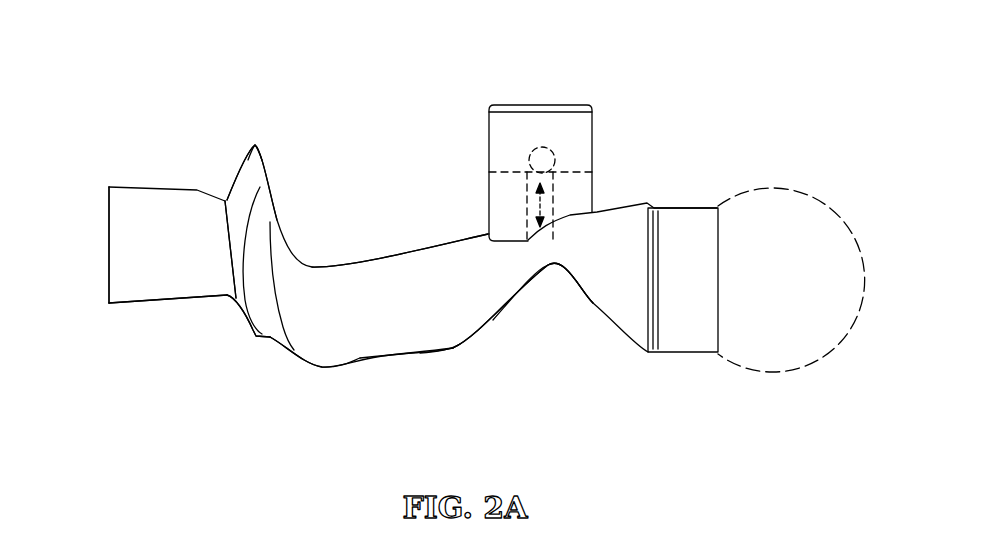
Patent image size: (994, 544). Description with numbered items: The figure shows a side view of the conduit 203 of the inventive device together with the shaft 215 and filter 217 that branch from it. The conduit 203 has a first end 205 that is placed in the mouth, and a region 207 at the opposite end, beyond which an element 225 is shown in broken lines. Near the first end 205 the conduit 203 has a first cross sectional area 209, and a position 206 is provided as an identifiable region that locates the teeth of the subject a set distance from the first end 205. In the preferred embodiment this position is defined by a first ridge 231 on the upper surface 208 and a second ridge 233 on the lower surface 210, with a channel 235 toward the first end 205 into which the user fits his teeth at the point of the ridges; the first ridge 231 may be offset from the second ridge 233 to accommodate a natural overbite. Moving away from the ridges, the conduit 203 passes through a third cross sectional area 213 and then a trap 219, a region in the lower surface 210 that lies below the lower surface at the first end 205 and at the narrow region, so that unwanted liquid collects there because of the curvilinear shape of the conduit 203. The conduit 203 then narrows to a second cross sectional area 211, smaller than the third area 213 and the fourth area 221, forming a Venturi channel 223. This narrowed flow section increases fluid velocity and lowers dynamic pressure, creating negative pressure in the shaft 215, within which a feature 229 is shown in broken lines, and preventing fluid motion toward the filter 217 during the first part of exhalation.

The conduit 203 is at (350, 252).
The first end 205 is at (109, 245).
The position 206 is at (267, 93).
The distal end 207 is at (693, 268).
The upper surface 208 is at (425, 248).
The first cross sectional area 209 is at (139, 281).
The lower surface 210 is at (453, 350).
The second cross sectional area 211 is at (548, 266).
The third cross sectional area 213 is at (390, 337).
The shaft 215 is at (573, 160).
The filter 217 is at (544, 151).
The trap 219 is at (332, 358).
The fourth area 221 is at (687, 337).
The Venturi channel 223 is at (597, 373).
The bulb 225 is at (797, 292).
The pivot 229 is at (527, 162).
The first ridge 231 is at (255, 143).
The second ridge 233 is at (267, 337).
The channel 235 is at (228, 201).